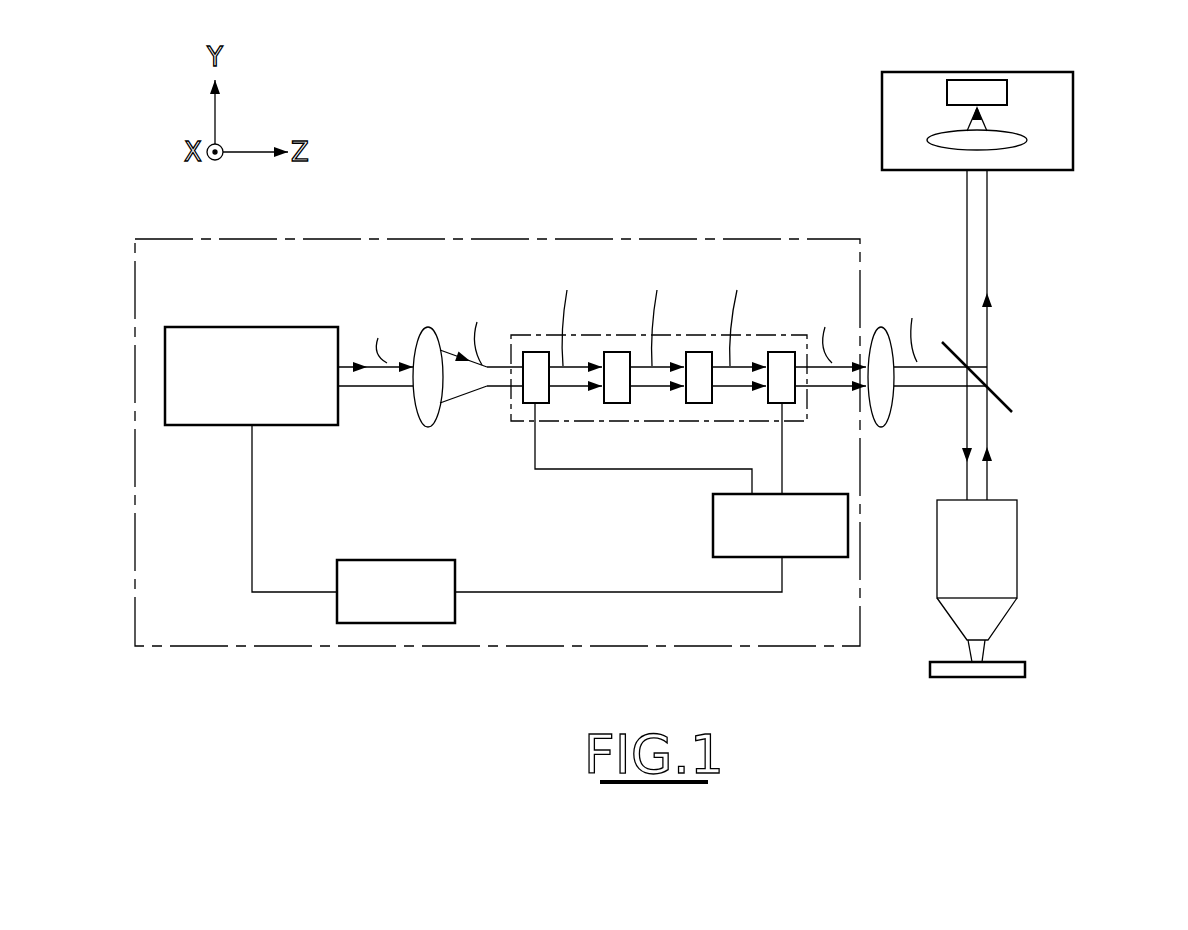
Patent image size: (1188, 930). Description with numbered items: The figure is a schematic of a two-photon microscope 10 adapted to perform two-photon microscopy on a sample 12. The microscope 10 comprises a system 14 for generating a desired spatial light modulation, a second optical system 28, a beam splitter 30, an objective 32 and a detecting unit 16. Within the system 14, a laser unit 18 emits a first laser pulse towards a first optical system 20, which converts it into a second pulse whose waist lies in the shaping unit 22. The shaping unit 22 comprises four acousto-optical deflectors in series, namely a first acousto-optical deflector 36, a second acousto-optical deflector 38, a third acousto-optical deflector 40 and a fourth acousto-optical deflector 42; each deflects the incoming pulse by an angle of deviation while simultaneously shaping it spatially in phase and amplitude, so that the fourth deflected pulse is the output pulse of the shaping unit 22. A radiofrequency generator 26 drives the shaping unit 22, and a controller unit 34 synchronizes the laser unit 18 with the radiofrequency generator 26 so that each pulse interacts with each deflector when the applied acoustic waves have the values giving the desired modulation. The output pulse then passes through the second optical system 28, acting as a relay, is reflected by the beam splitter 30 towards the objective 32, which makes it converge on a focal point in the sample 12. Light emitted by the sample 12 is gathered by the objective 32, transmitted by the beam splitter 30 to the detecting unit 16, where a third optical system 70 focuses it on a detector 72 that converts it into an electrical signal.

The two-photon microscope 10 is at (1100, 96).
The sample 12 is at (1005, 661).
The system for generating a desired spatial light modulation 14 is at (420, 240).
The detecting unit 16 is at (1057, 132).
The laser unit 18 is at (218, 352).
The first optical system 20 is at (426, 426).
The shaping unit 22 is at (520, 422).
The radiofrequency generator 26 is at (780, 525).
The second optical system 28 is at (884, 427).
The beam splitter 30 is at (997, 390).
The objective 32 is at (990, 558).
The controller unit 34 is at (396, 591).
The first acousto-optical deflector 36 is at (527, 395).
The second acousto-optical deflector 38 is at (617, 404).
The third acousto-optical deflector 40 is at (700, 404).
The fourth acousto-optical deflector 42 is at (795, 398).
The third optical system 70 is at (945, 138).
The detector 72 is at (977, 90).